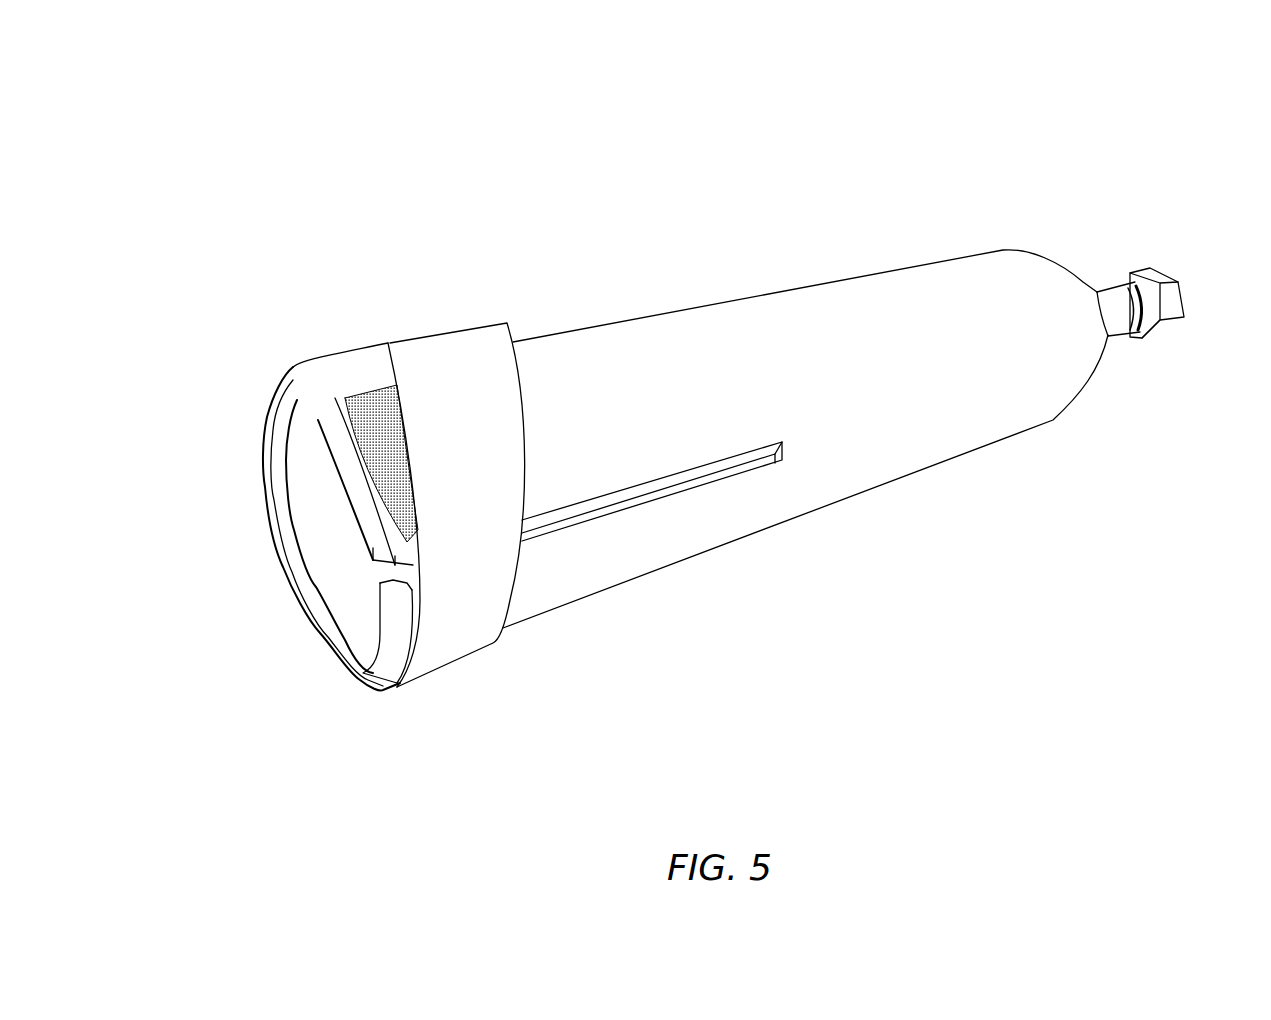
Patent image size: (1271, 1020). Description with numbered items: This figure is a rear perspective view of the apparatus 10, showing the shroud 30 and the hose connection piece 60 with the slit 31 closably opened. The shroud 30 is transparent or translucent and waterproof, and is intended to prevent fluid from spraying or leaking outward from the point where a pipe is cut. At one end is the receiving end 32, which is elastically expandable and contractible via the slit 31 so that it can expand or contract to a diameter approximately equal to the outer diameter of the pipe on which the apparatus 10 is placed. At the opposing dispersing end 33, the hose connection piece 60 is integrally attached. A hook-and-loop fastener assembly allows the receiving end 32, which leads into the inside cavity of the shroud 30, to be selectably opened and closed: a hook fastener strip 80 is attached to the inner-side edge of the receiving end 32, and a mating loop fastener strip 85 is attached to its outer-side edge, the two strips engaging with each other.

The apparatus 10 is at (1168, 173).
The shroud 30 is at (882, 375).
The slit 31 is at (611, 513).
The receiving end 32 is at (545, 432).
The dispersing end 33 is at (1113, 310).
The hose connection piece 60 is at (1168, 297).
The hook fastener strip 80 is at (385, 460).
The loop fastener strip 85 is at (475, 570).